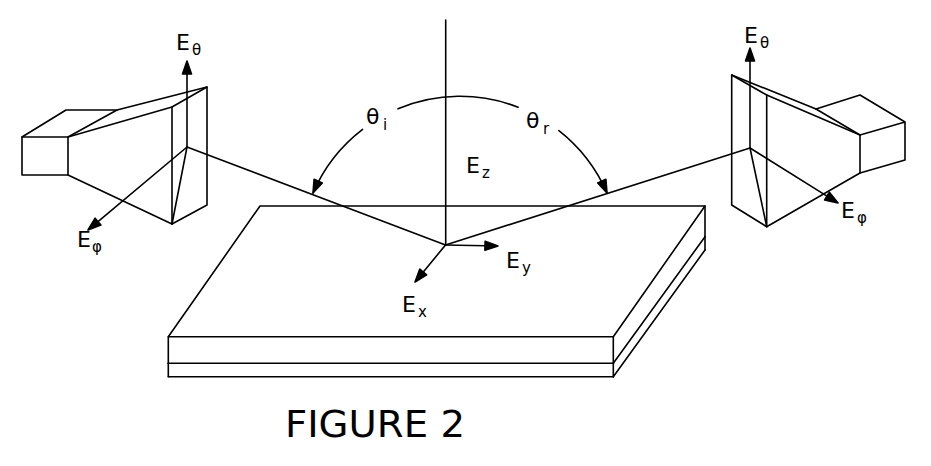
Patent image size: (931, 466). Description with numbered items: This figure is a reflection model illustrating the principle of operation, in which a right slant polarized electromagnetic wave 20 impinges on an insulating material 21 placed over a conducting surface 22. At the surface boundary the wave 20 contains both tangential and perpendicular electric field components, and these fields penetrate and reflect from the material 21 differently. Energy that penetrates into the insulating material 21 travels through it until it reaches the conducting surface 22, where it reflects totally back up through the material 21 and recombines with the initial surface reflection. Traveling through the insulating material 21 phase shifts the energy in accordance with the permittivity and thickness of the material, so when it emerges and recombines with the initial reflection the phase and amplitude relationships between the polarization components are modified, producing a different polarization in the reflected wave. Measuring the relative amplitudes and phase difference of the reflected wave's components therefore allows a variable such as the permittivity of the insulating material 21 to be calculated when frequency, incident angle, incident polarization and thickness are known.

The right slant polarized electromagnetic wave 20 is at (633, 185).
The insulating material 21 is at (588, 283).
The conducting surface 22 is at (545, 373).